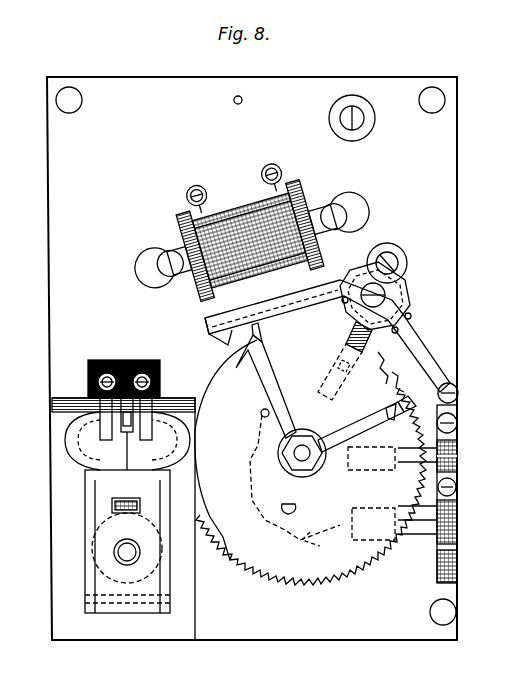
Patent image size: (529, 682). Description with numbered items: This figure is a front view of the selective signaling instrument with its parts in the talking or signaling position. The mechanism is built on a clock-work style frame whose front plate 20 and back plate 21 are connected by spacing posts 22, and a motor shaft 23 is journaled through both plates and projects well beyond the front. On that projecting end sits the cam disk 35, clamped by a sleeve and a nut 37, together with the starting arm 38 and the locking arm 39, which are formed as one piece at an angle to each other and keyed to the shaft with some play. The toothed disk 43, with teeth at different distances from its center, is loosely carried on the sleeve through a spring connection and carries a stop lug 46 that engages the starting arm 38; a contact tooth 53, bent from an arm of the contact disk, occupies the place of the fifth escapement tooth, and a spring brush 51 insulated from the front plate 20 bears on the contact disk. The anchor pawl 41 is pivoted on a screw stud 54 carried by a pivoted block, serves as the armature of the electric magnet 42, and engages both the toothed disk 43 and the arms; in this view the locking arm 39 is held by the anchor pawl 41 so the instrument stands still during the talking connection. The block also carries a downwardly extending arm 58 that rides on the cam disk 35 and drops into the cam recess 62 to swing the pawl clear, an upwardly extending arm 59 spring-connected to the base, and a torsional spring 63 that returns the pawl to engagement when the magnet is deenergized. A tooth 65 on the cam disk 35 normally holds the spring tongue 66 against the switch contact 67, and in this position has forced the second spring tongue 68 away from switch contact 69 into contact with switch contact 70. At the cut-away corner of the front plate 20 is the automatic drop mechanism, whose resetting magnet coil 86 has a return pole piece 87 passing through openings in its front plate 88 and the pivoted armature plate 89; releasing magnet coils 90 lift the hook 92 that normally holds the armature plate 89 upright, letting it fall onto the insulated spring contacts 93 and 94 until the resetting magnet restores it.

The front plate 20 is at (238, 637).
The back plate 21 is at (156, 634).
The spacing posts 22 is at (457, 612).
The motor shaft 23 is at (296, 456).
The cam disk 35 is at (262, 505).
The nut 37 is at (300, 470).
The starting arm 38 is at (354, 425).
The locking arm 39 is at (266, 360).
The anchor pawl 41 is at (298, 292).
The electric magnet 42 is at (240, 214).
The toothed disk 43 is at (272, 574).
The stop lug 46 is at (340, 462).
The spring brush 51 is at (454, 389).
The contact tooth 53 is at (394, 372).
The screw stud 54 is at (383, 292).
The downwardly extending arm 58 is at (329, 372).
The upwardly extending arm 59 is at (393, 260).
The cam recess 62 is at (258, 444).
The torsional spring 63 is at (366, 340).
The tooth 65 is at (300, 530).
The spring tongue 66 is at (371, 467).
The switch contact 67 is at (455, 446).
The spring tongue 68 is at (350, 531).
The switch contact 69 is at (457, 508).
The switch contact 70 is at (422, 540).
The resetting magnet coil 86 is at (140, 554).
The return pole piece 87 is at (110, 506).
The front plate 88 is at (88, 476).
The armature plate 89 is at (155, 512).
The releasing magnet coils 90 is at (70, 447).
The hook 92 is at (126, 440).
The spring contact 93 is at (95, 396).
The spring contact 94 is at (152, 396).